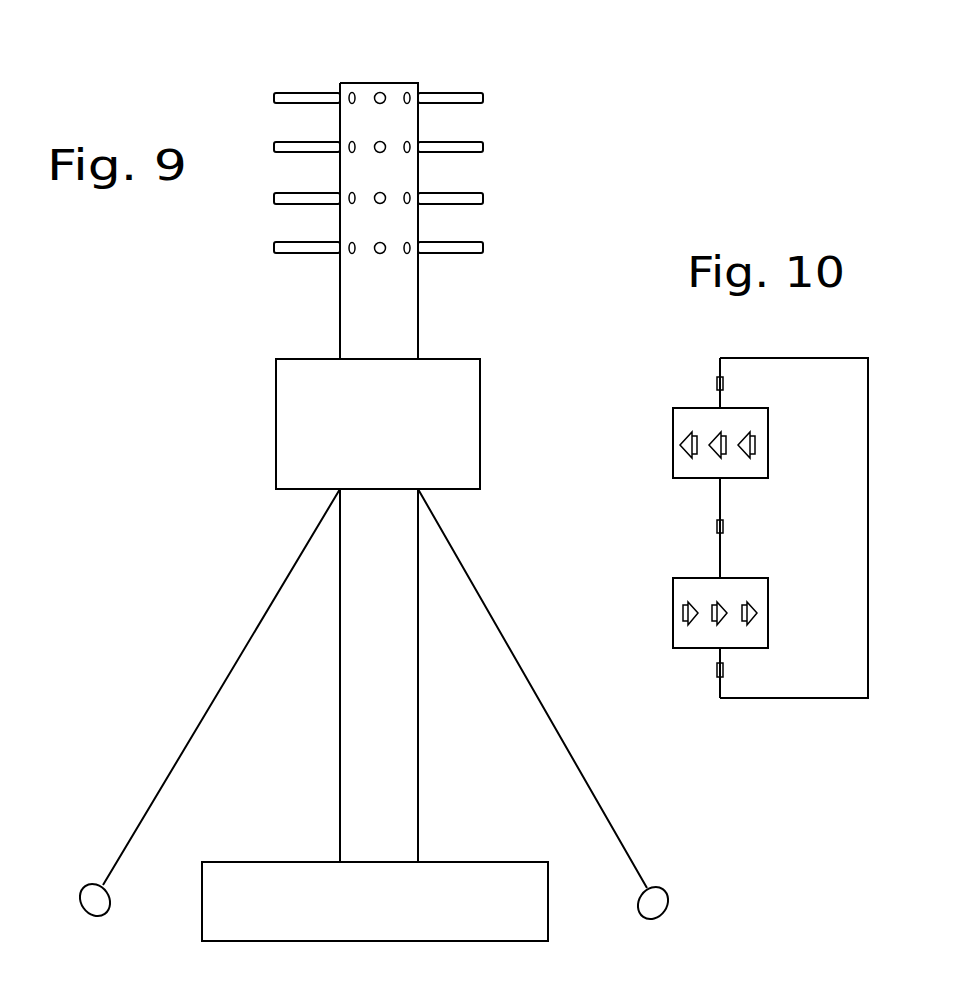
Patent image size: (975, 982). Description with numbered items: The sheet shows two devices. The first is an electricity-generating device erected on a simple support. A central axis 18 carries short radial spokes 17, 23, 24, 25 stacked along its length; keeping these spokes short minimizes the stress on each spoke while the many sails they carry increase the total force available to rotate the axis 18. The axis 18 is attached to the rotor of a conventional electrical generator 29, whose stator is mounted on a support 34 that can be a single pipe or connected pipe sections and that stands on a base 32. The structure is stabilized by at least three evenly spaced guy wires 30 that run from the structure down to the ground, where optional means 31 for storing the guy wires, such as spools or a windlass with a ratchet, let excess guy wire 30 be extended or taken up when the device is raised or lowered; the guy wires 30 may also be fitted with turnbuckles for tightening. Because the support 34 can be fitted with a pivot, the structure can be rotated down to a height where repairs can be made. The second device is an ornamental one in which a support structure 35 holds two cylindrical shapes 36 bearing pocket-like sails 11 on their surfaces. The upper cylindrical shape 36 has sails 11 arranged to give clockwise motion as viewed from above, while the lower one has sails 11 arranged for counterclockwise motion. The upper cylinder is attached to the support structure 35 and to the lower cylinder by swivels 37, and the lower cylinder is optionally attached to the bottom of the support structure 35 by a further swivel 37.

In FIG. 10, the pocket-like sails 11 is at (751, 432).
In FIG. 9, the radial spoke 17 is at (307, 92).
In FIG. 9, the axis/axle 18 is at (383, 82).
In FIG. 9, the radial spoke 23 is at (313, 143).
In FIG. 9, the radial spoke 24 is at (313, 193).
In FIG. 9, the radial spoke 25 is at (313, 241).
In FIG. 9, the electrical generator 29 is at (386, 414).
In FIG. 9, the guy wires 30 is at (267, 612).
In FIG. 9, the means for storing the guy wires 31 is at (81, 893).
In FIG. 9, the base 32 is at (392, 910).
In FIG. 9, the support 34 is at (353, 694).
In FIG. 10, the support structure 35 is at (865, 483).
In FIG. 10, the cylindrical shapes 36 is at (770, 436).
In FIG. 10, the swivels 37 is at (725, 383).